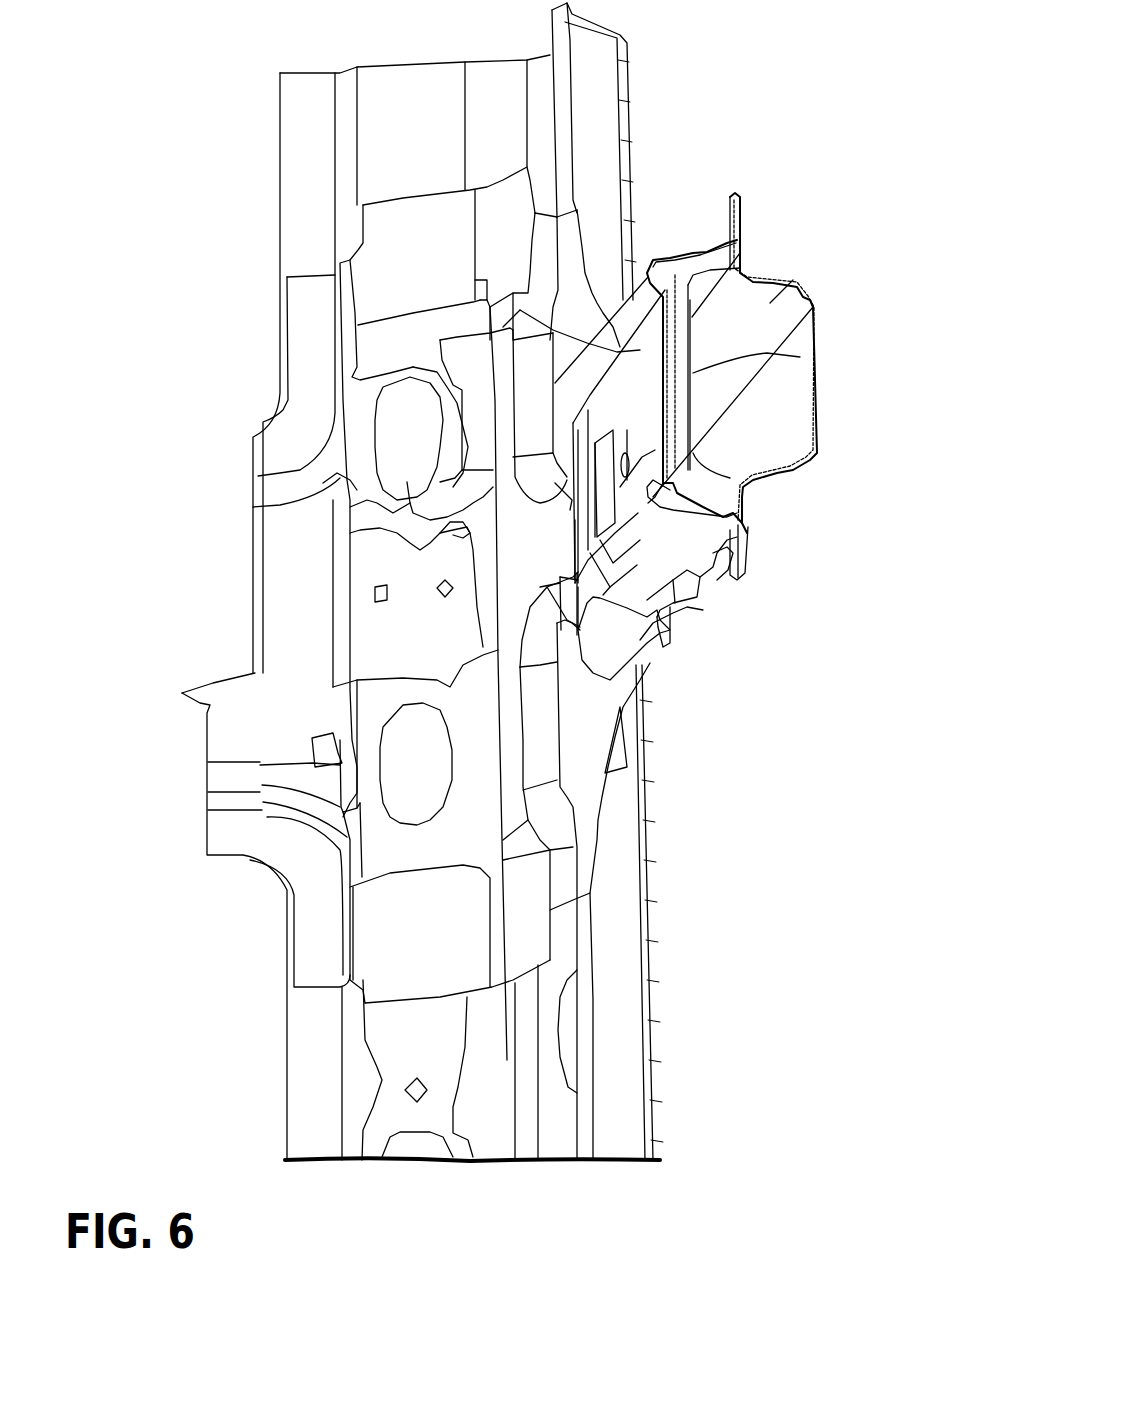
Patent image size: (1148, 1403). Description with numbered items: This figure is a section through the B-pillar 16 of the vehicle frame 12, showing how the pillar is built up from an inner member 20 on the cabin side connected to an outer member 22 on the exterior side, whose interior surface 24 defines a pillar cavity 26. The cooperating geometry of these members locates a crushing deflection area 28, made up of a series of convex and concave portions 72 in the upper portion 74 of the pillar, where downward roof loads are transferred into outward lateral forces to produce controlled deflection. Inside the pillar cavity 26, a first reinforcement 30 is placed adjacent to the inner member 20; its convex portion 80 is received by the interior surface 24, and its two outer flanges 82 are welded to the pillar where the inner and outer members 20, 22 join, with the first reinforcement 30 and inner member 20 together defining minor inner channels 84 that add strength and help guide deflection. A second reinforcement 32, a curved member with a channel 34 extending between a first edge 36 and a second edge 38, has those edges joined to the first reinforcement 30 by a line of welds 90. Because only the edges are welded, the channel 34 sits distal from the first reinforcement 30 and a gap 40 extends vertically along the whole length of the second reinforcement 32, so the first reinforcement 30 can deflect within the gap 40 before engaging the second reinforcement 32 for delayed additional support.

The frame 12 is at (740, 80).
The B-pillar 16 is at (703, 748).
The inner member 20 is at (362, 393).
The outer member 22 is at (820, 412).
The interior surface 24 is at (773, 303).
The pillar cavity 26 is at (733, 375).
The crushing deflection area 28 is at (584, 512).
The first reinforcement 30 is at (683, 520).
The second reinforcement 32 is at (705, 500).
The channel 34 is at (693, 373).
The first edge 36 is at (745, 273).
The second edge 38 is at (753, 495).
The gap 40 is at (767, 353).
The convex and concave portions 72 is at (637, 352).
The upper portion 74 is at (632, 350).
The convex portion 80 is at (693, 453).
The outer flanges 82 is at (737, 213).
The minor inner channels 84 is at (662, 278).
The welds 90 is at (738, 267).